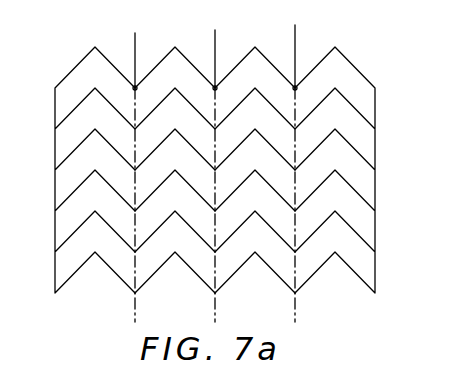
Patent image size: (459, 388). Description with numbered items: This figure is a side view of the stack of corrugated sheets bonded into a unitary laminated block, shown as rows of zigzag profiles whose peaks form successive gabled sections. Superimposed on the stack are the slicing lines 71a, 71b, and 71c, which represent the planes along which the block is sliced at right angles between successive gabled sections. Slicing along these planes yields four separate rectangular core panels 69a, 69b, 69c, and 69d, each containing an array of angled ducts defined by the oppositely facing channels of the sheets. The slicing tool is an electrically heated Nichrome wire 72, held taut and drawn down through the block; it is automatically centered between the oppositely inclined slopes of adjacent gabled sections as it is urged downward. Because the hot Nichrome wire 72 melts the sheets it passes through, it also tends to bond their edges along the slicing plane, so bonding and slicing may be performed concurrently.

The core panel 69a is at (83, 58).
The core panel 69b is at (152, 68).
The core panel 69c is at (245, 57).
The core panel 69d is at (317, 64).
The slicing line 71a is at (135, 34).
The slicing line 71b is at (215, 31).
The slicing line 71c is at (296, 27).
The Nichrome wire 72 is at (133, 85).